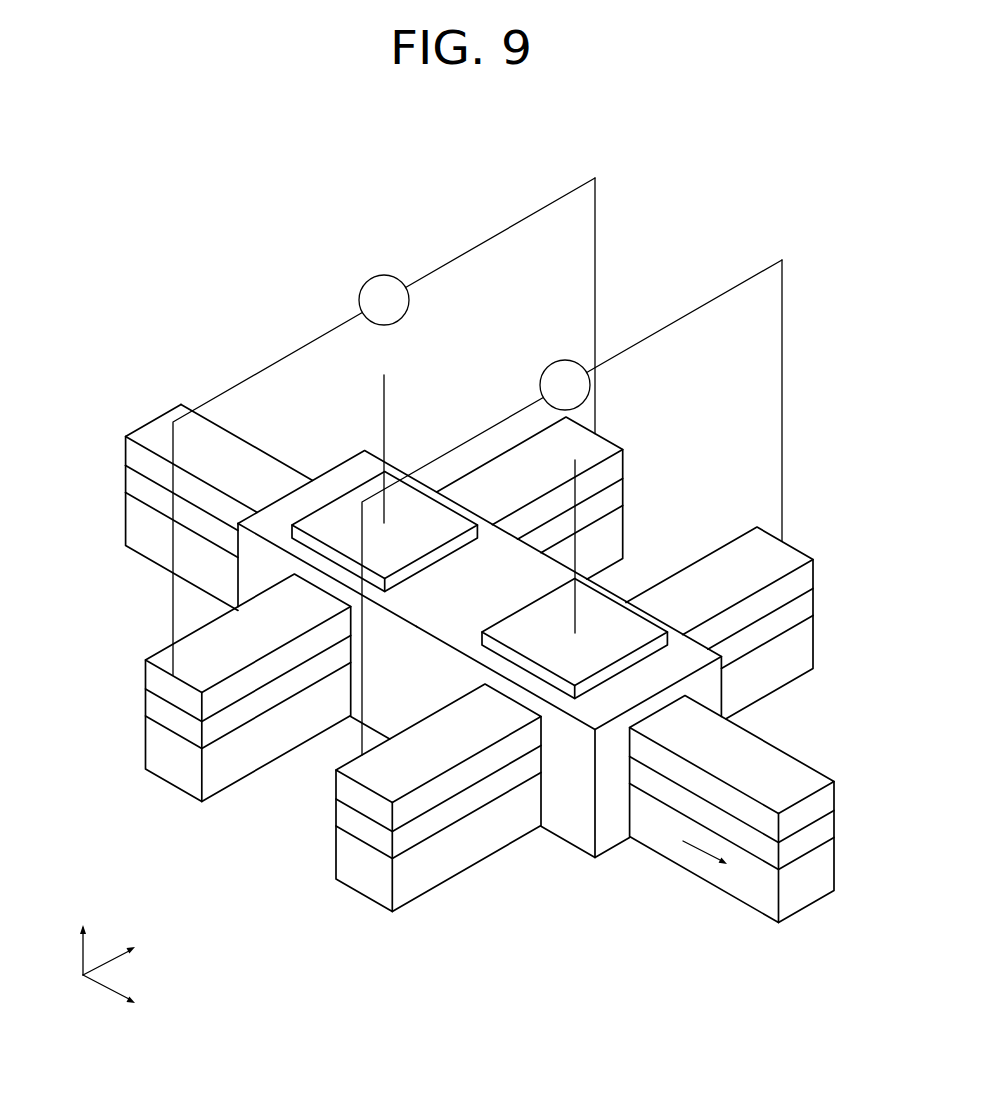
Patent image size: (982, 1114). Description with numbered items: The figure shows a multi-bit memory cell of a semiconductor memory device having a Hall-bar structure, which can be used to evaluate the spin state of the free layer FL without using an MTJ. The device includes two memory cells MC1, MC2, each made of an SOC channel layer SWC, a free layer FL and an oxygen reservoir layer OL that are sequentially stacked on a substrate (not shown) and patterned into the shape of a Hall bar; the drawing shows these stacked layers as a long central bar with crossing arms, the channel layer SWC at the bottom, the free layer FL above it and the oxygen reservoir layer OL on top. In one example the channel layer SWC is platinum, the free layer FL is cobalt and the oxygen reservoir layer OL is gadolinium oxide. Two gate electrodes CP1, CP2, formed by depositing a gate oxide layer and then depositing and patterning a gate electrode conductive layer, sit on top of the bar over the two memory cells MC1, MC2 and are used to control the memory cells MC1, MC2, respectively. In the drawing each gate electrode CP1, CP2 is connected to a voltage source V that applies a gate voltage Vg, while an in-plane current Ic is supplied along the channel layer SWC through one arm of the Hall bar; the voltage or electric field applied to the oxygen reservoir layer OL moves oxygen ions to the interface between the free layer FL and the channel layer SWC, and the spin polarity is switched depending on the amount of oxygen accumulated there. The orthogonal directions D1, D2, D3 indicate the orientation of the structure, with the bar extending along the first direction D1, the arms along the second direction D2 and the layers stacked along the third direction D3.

The oxygen reservoir layer OL is at (127, 454).
The free layer FL is at (127, 483).
The SOC channel layer SWC is at (127, 526).
The first memory cell MC1 is at (405, 465).
The second memory cell MC2 is at (626, 595).
The gate electrode CP1 is at (355, 503).
The gate electrode CP2 is at (524, 627).
The voltage source V is at (477, 466).
The gate voltage Vg is at (479, 489).
The in-plane current Ic is at (719, 864).
The first direction D1 is at (130, 1004).
The second direction D2 is at (130, 954).
The third direction D3 is at (83, 936).